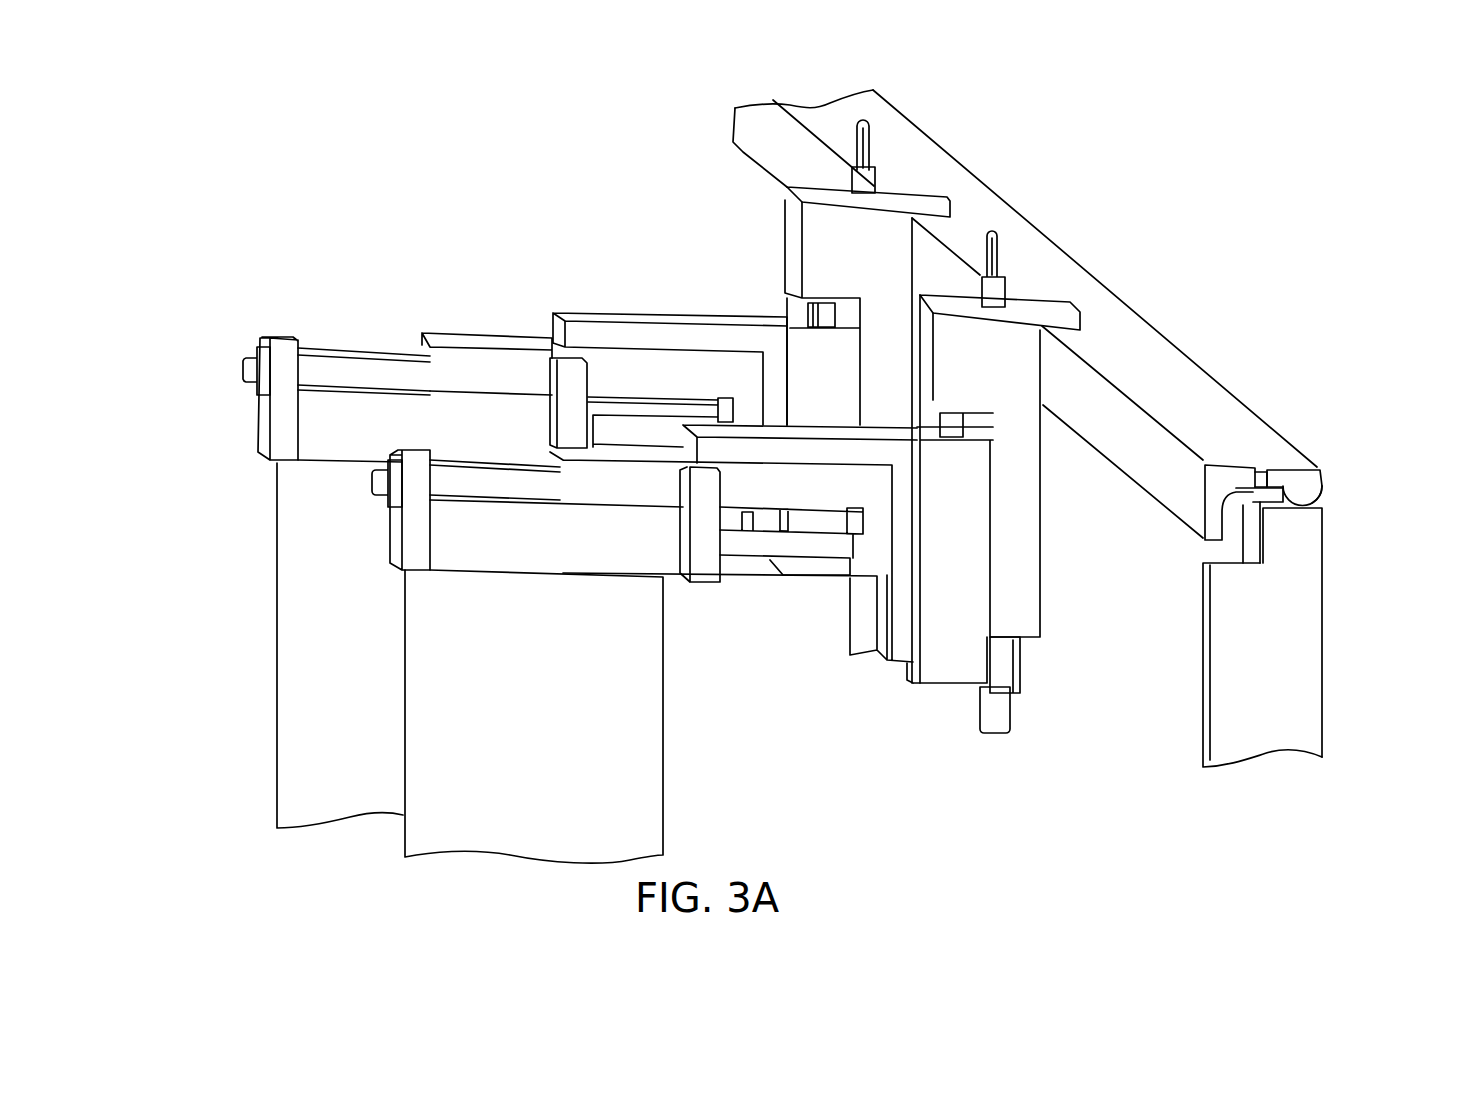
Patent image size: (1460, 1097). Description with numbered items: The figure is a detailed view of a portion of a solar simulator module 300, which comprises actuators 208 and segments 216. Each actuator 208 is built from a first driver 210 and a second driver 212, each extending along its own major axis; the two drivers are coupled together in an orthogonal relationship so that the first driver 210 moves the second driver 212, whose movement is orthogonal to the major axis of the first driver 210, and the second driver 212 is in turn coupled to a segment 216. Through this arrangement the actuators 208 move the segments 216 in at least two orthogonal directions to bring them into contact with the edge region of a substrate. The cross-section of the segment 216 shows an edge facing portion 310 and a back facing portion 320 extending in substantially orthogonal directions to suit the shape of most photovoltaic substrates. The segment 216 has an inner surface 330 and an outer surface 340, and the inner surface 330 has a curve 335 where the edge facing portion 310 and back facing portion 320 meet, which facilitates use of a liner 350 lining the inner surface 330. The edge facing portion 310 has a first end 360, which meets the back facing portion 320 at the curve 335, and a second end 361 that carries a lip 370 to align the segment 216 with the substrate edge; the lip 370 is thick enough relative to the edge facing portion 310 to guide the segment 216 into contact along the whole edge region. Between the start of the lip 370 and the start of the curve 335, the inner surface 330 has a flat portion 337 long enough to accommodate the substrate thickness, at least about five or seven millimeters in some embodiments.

The solar simulator module 300 is at (303, 132).
The actuator 208 is at (937, 683).
The first driver 210 is at (260, 423).
The second driver 212 is at (941, 200).
The segment 216 is at (1048, 243).
The edge facing portion 310 is at (1307, 467).
The back facing portion 320 is at (1217, 540).
The inner surface 330 is at (1265, 510).
The curve 335 is at (1243, 563).
The flat portion 337 is at (1268, 487).
The outer surface 340 is at (1153, 377).
The liner 350 is at (1247, 505).
The first end 360 is at (1236, 480).
The second end 361 is at (1322, 482).
The lip 370 is at (1318, 497).